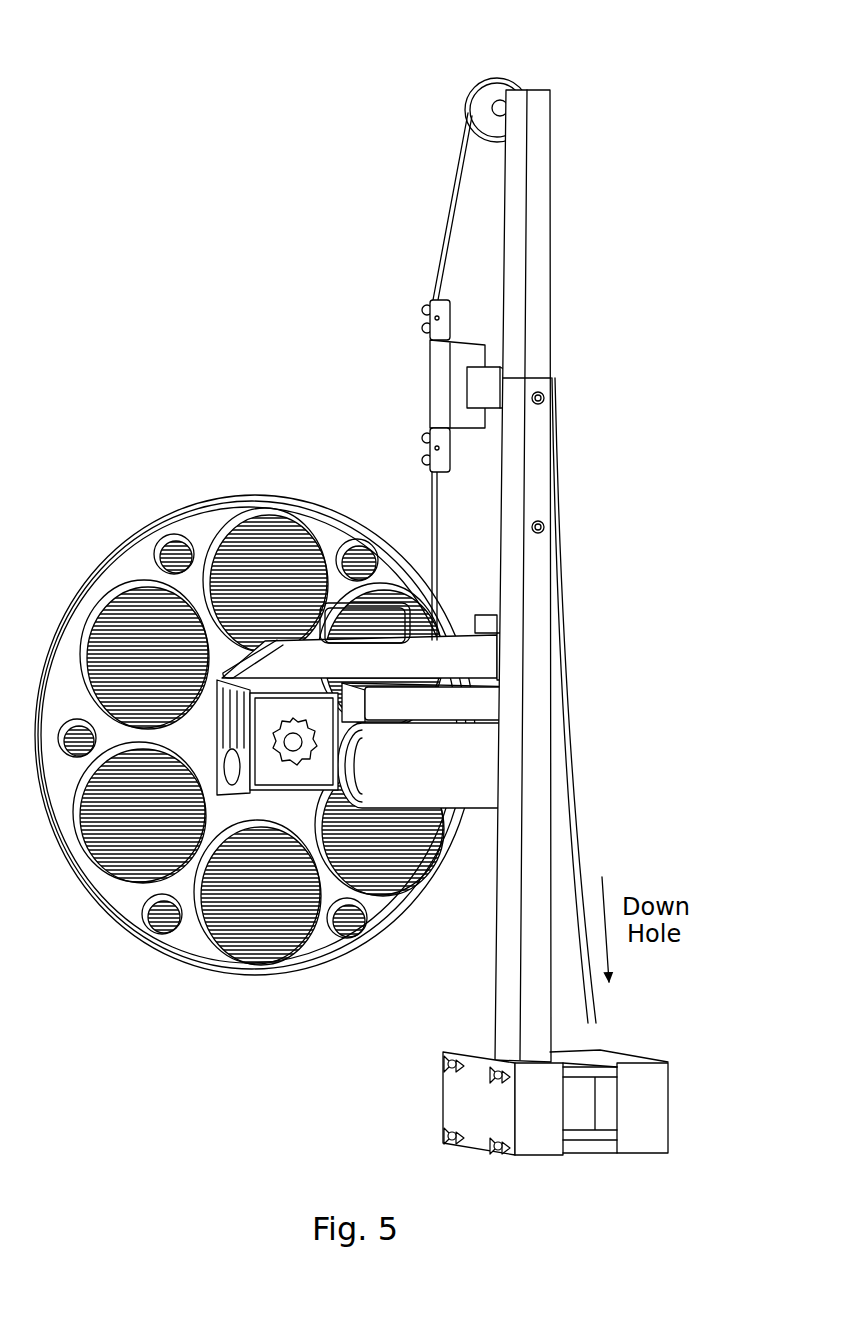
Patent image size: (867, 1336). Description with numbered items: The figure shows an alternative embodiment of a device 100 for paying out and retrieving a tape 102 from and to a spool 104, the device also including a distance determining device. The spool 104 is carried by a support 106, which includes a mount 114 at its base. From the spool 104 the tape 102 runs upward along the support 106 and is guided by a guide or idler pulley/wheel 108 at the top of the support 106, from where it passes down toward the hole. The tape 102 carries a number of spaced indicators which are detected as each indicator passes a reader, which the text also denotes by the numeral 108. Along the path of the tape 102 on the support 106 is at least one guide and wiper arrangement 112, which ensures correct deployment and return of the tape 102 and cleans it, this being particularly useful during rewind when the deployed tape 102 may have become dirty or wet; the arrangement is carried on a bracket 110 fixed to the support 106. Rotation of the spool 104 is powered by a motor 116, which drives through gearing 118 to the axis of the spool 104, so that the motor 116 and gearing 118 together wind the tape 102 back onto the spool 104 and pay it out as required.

The device 100 is at (430, 153).
The tape 102 is at (585, 698).
The spool 104 is at (176, 486).
The support 106 is at (553, 370).
The guide or idler pulley/wheel 108 is at (507, 80).
The bracket 110 is at (410, 374).
The guide and wiper arrangement 112 is at (400, 306).
The mount 114 is at (642, 1108).
The motor 116 is at (472, 780).
The gearing 118 is at (272, 772).